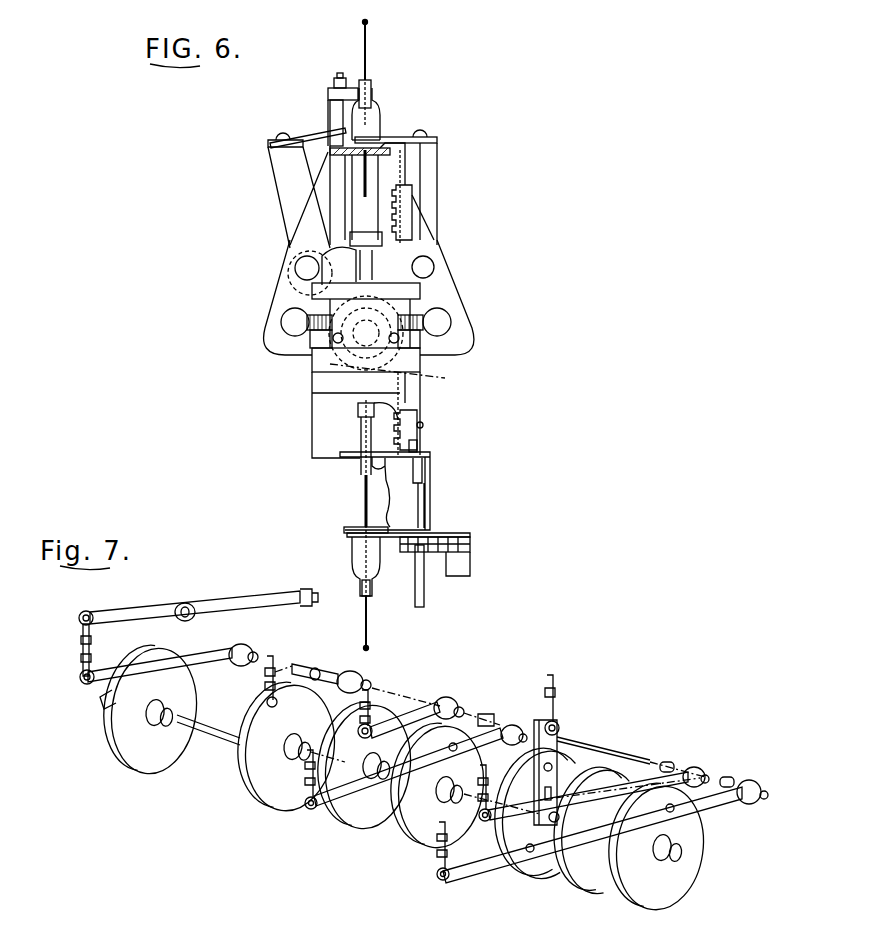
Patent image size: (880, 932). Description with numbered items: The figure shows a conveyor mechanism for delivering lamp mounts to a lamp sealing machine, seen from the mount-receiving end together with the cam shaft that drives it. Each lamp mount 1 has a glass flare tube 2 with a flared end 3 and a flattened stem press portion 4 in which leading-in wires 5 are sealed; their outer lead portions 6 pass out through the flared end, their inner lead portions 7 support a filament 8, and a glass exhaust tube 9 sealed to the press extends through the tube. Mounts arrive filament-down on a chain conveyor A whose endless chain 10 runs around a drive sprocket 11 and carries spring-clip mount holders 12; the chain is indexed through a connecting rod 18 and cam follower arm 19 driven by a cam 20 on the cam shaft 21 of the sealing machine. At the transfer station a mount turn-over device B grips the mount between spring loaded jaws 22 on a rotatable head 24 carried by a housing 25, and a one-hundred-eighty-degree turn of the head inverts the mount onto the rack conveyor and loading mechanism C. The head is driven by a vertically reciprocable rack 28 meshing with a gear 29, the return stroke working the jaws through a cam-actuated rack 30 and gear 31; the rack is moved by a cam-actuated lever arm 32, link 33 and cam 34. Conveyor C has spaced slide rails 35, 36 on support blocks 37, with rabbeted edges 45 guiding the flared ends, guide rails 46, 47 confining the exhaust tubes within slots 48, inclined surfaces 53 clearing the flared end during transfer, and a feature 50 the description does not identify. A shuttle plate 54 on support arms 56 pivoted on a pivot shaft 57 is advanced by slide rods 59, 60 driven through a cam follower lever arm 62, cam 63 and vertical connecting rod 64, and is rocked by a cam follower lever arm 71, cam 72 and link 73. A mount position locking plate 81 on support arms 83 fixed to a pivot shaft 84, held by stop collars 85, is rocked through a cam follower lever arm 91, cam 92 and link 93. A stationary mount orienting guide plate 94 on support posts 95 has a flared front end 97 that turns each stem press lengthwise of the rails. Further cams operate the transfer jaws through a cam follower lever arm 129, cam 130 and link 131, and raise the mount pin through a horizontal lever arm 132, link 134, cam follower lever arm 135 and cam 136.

In FIG. 6, the lamp mount 1 is at (385, 60).
In FIG. 6, the glass flare tube 2 is at (382, 128).
In FIG. 6, the flared end 3 is at (334, 120).
In FIG. 6, the flattened stem press portion 4 is at (372, 88).
In FIG. 6, the leading-in wires 5 is at (372, 118).
In FIG. 6, the outer lead portions 6 is at (368, 172).
In FIG. 6, the inner lead portions 7 is at (365, 48).
In FIG. 6, the filament 8 is at (368, 22).
In FIG. 6, the glass exhaust tube 9 is at (378, 220).
In FIG. 6, the endless chain 10 is at (440, 534).
In FIG. 6, the drive sprocket 11 is at (450, 576).
In FIG. 6, the mount holders 12 is at (388, 525).
In FIG. 7, the connecting rod 18 is at (556, 690).
In FIG. 7, the cam follower arm 19 is at (558, 738).
In FIG. 7, the cam 20 is at (536, 874).
In FIG. 7, the cam shaft 21 is at (672, 862).
In FIG. 6, the spring loaded jaws 22 is at (296, 260).
In FIG. 6, the rotatable head portion 24 is at (312, 356).
In FIG. 6, the housing 25 is at (312, 400).
In FIG. 6, the vertically reciprocable rack 28 is at (412, 195).
In FIG. 6, the gear 29 is at (398, 374).
In FIG. 6, the cam-actuated rack 30 is at (366, 333).
In FIG. 6, the gear 31 is at (310, 338).
In FIG. 7, the cam-actuated lever arm 32 is at (492, 884).
In FIG. 6, the link 33 is at (424, 600).
In FIG. 7, the link 33 is at (432, 838).
In FIG. 7, the cam 34 is at (652, 905).
In FIG. 6, the stationary rail 35 is at (300, 138).
In FIG. 6, the stationary rail 36 is at (410, 160).
In FIG. 6, the support blocks 37 is at (452, 290).
In FIG. 6, the rabbeted edges 45 is at (330, 151).
In FIG. 6, the guide rail 46 is at (350, 238).
In FIG. 6, the guide rail 47 is at (420, 238).
In FIG. 6, the slots 48 is at (352, 198).
In FIG. 6, the cone 50 is at (318, 160).
In FIG. 6, the inclined surfaces 53 is at (320, 160).
In FIG. 6, the shuttle plate 54 is at (418, 135).
In FIG. 6, the support arms 56 is at (437, 204).
In FIG. 6, the pivot shaft 57 is at (434, 266).
In FIG. 6, the slide rod 59 is at (451, 322).
In FIG. 6, the slide rod 60 is at (282, 322).
In FIG. 7, the cam follower lever arm 62 is at (345, 815).
In FIG. 7, the cam 63 is at (405, 828).
In FIG. 7, the vertical connecting rod 64 is at (306, 806).
In FIG. 7, the cam follower lever arm 71 is at (412, 708).
In FIG. 7, the cam 72 is at (362, 830).
In FIG. 7, the link 73 is at (372, 692).
In FIG. 6, the mount position locking plate 81 is at (330, 132).
In FIG. 6, the support arms 83 is at (280, 212).
In FIG. 6, the pivot shaft 84 is at (302, 270).
In FIG. 6, the stop collars 85 is at (292, 288).
In FIG. 7, the cam follower lever arm 91 is at (315, 670).
In FIG. 7, the cam 92 is at (258, 787).
In FIG. 7, the link 93 is at (264, 690).
In FIG. 6, the stationary mount orienting guide plate 94 is at (330, 92).
In FIG. 6, the support posts 95 is at (328, 104).
In FIG. 6, the flared front end 97 is at (346, 80).
In FIG. 7, the cam follower lever arm 129 is at (494, 822).
In FIG. 7, the cam 130 is at (594, 896).
In FIG. 7, the link 131 is at (488, 776).
In FIG. 7, the horizontal lever arm 132 is at (226, 598).
In FIG. 7, the link 134 is at (82, 656).
In FIG. 7, the cam follower lever arm 135 is at (116, 664).
In FIG. 7, the cam 136 is at (120, 748).
In FIG. 6, the chain conveyor A is at (452, 495).
In FIG. 6, the mount turn-over device B is at (300, 378).
In FIG. 6, the rack conveyor and loading mechanism C is at (468, 138).